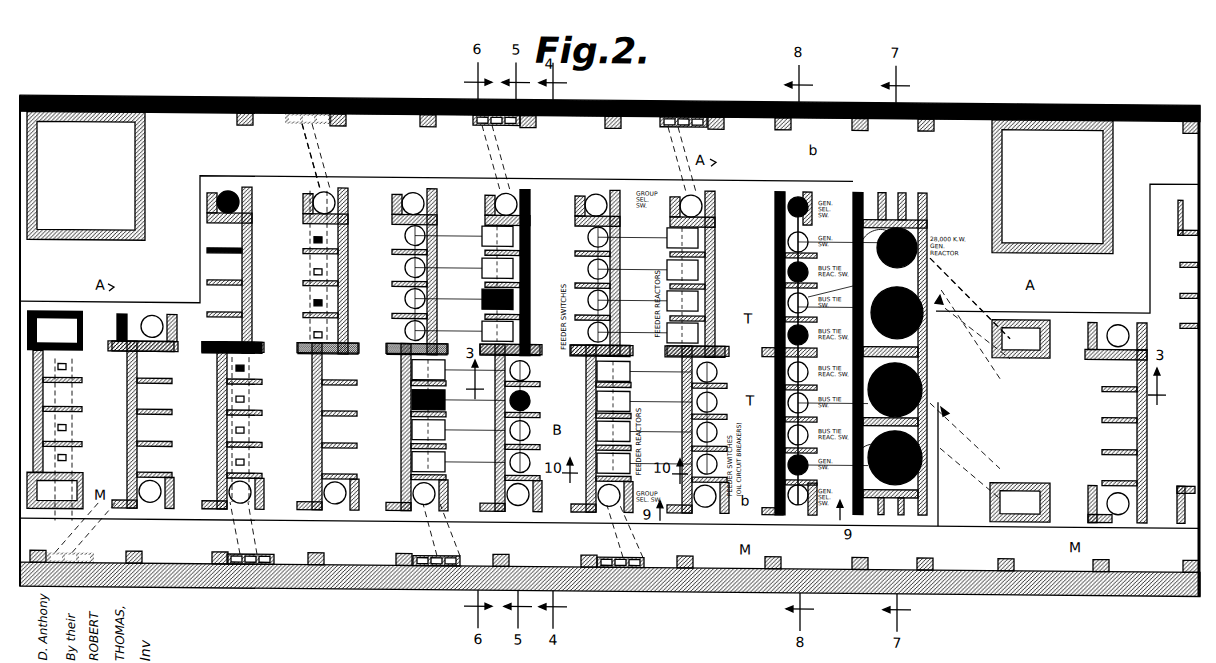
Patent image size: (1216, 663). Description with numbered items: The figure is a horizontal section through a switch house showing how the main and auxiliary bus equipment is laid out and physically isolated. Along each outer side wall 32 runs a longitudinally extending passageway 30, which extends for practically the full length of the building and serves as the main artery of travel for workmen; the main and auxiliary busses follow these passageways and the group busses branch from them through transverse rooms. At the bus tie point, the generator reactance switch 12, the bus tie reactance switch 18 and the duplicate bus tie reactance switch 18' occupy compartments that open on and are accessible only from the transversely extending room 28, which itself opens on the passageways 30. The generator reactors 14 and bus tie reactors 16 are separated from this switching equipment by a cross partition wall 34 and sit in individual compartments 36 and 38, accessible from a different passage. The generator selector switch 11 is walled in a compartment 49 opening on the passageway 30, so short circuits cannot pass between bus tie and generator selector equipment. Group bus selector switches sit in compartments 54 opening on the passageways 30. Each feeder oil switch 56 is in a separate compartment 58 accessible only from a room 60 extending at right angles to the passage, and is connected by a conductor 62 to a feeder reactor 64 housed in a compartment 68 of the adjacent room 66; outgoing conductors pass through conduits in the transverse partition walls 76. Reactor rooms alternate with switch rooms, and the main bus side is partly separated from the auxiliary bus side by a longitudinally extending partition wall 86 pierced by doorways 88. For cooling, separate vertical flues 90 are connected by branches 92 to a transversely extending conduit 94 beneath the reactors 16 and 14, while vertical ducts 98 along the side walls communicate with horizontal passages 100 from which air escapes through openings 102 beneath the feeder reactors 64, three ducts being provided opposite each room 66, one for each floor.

The vertical duct 98 is at (318, 111).
The outer side wall 32 is at (350, 95).
The passageway 30 is at (598, 344).
The compartment 54 is at (228, 189).
The horizontal passage 100 is at (302, 148).
The opening 102 is at (310, 236).
The compartment 68 is at (312, 270).
The room 66 is at (312, 299).
The doorway 88 is at (274, 344).
The compartment 58 is at (540, 410).
The room 60 is at (373, 339).
The feeder reactor 64 is at (490, 292).
The conductor 62 is at (446, 402).
The feeder oil switch 56 is at (530, 396).
The transverse partition wall 76 is at (532, 236).
The longitudinally extending partition wall 86 is at (122, 342).
The vertical flue 90 is at (1043, 490).
The branch 92 is at (940, 318).
The transversely extending conduit 94 is at (908, 236).
The generator reactor 14 is at (912, 225).
The bus tie reactor 16 is at (925, 298).
The bus tie reactance switch 18 is at (775, 339).
The bus tie reactance switch 18' is at (773, 346).
The generator reactance switch 12 is at (790, 458).
The transversely extending room 28 is at (815, 195).
The compartment 49 is at (825, 186).
The generator selector switch 11 is at (797, 185).
The cross partition wall 34 is at (878, 188).
The compartment 36 is at (930, 468).
The compartment 38 is at (925, 412).